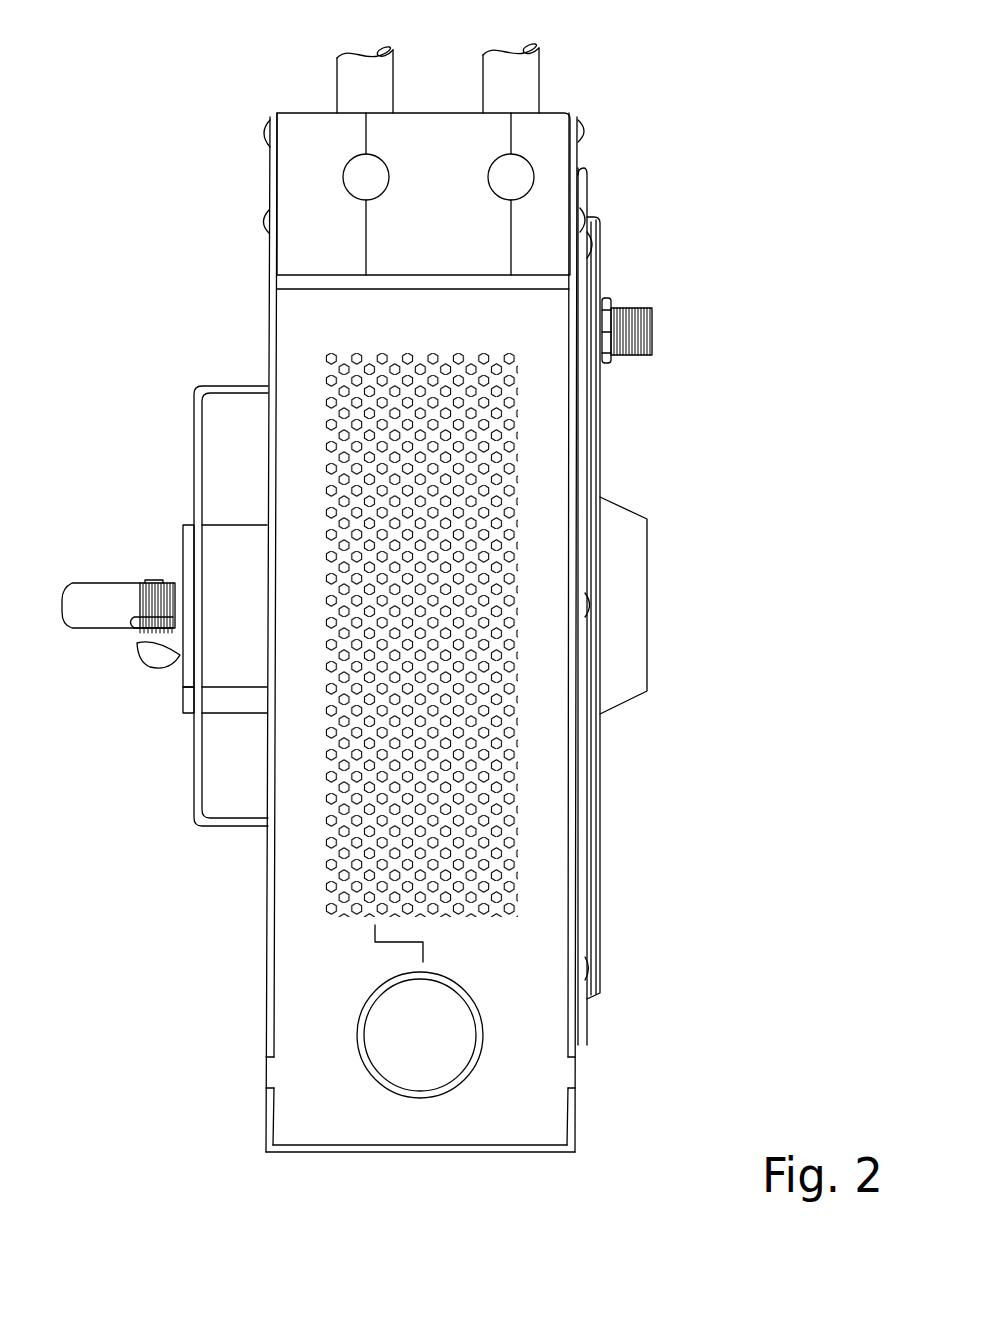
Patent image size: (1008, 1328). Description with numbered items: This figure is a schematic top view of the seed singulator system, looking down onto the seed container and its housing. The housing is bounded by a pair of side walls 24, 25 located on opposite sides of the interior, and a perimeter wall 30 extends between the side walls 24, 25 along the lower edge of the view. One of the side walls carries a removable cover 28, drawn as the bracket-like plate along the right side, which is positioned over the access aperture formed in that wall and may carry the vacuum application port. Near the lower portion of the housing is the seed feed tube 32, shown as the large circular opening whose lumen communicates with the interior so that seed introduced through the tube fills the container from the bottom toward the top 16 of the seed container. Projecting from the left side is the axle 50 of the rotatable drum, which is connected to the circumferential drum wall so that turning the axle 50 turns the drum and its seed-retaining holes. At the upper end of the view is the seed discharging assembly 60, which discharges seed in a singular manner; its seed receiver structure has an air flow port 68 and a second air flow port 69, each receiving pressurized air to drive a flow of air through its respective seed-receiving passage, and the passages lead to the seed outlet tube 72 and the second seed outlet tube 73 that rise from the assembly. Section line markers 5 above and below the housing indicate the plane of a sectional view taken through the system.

The section line 5- 5 is at (393, 18).
The top 16 is at (322, 1003).
The side wall 24 is at (573, 1102).
The side wall 25 is at (263, 1100).
The cover 28 is at (600, 783).
The perimeter wall 30 is at (493, 1152).
The seed feed tube 32 is at (468, 998).
The axle 50 is at (103, 607).
The seed discharging assembly 60 is at (592, 154).
The air flow port 68 is at (525, 187).
The second air flow port 69 is at (347, 172).
The seed outlet tube 72 is at (522, 93).
The left conduit 73 is at (347, 82).